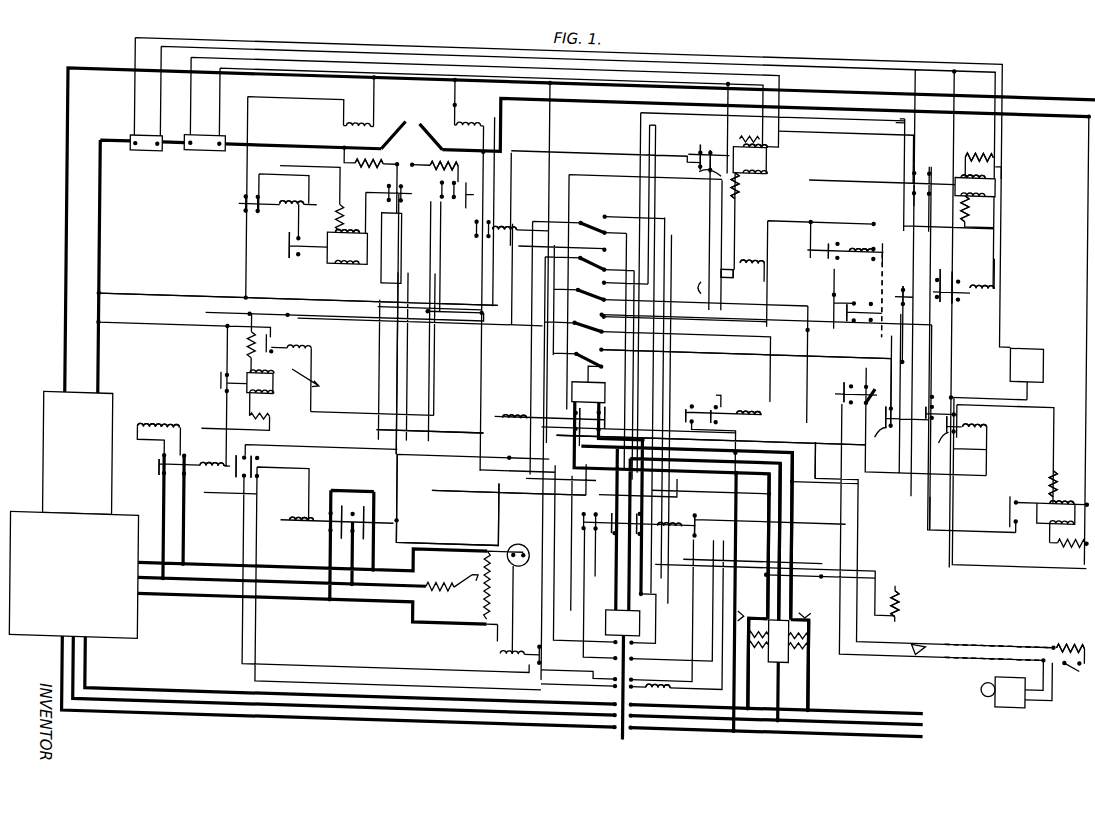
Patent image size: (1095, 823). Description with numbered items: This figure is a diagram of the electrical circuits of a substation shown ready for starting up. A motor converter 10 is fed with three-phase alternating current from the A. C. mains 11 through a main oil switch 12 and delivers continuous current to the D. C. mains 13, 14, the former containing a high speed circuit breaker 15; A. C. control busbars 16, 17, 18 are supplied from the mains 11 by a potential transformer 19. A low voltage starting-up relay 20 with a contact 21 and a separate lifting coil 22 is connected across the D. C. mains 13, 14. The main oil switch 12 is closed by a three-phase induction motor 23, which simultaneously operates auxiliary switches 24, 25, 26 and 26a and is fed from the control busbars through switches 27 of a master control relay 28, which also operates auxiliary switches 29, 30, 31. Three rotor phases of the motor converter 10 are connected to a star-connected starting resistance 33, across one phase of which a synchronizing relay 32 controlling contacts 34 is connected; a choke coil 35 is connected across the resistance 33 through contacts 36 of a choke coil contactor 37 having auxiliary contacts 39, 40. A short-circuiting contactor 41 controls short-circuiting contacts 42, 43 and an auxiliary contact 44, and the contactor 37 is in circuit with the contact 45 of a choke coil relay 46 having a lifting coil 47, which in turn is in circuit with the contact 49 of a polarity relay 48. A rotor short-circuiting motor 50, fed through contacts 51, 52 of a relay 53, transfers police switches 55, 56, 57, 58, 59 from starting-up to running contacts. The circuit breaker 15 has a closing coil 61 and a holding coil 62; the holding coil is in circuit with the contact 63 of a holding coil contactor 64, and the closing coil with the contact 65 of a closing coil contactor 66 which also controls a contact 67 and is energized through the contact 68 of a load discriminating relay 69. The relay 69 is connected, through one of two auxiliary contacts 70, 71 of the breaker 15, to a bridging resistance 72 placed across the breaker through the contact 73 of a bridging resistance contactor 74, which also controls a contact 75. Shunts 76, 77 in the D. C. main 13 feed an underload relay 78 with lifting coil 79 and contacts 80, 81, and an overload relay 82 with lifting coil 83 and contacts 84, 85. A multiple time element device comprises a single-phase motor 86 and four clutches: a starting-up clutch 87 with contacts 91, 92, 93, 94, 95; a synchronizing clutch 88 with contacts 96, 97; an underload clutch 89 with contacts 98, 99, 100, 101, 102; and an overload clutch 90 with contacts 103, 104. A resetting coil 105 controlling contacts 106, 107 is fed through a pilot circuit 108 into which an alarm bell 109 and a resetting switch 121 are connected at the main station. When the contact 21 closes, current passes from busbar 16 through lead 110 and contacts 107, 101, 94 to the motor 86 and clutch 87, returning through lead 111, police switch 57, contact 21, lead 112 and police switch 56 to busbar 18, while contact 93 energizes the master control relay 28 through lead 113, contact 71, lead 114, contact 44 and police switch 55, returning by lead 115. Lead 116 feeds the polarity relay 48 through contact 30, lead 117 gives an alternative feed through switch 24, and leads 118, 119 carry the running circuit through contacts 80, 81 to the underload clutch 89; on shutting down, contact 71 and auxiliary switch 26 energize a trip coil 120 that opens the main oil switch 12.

The motor converter 10 is at (74, 514).
The A. C. mains 11 is at (927, 710).
The main oil switch 12 is at (622, 716).
The D. C. main 13 is at (101, 183).
The D. C. main 14 is at (66, 177).
The high speed circuit breaker 15 is at (402, 124).
The A. C. control busbar 16 is at (797, 510).
The A. C. control busbar 17 is at (786, 486).
The A. C. control busbar 18 is at (772, 521).
The potential transformer 19 is at (795, 628).
The starting-up relay 20 is at (1052, 480).
The contact 21 is at (1013, 480).
The lifting coil 22 is at (1061, 485).
The three-phase induction motor 23 is at (621, 675).
The auxiliary switch 24 is at (612, 633).
The auxiliary switch 25 is at (612, 641).
The auxiliary switch 26 is at (648, 700).
The auxiliary switch 26a is at (599, 662).
The switches 27 is at (645, 506).
The master control relay 28 is at (669, 536).
The auxiliary switch 29 is at (599, 561).
The auxiliary switch 30 is at (587, 520).
The auxiliary switch 31 is at (699, 506).
The synchronizing relay 32 is at (510, 630).
The starting resistance 33 is at (467, 572).
The contacts 34 is at (510, 644).
The choke coil 35 is at (158, 414).
The contacts 36 is at (162, 472).
The choke coil contactor 37 is at (220, 464).
The auxiliary contact 39 is at (240, 475).
The auxiliary contact 40 is at (262, 462).
The short-circuiting contactor 41 is at (300, 516).
The short-circuiting contact 42 is at (346, 497).
The short-circuiting contact 43 is at (369, 497).
The auxiliary contact 44 is at (401, 510).
The contact 45 is at (222, 368).
The choke coil relay 46 is at (277, 380).
The lifting coil 47 is at (270, 410).
The polarity relay 48 is at (314, 340).
The contact 49 is at (276, 340).
The rotor short-circuiting motor 50 is at (588, 392).
The contact 51 is at (608, 400).
The contact 52 is at (578, 402).
The relay 53 is at (514, 408).
The police switch 55 is at (597, 350).
The police switch 56 is at (585, 313).
The police switch 57 is at (586, 284).
The police switch 58 is at (600, 254).
The police switch 59 is at (602, 212).
The closing coil 61 is at (359, 116).
The holding coil 62 is at (469, 115).
The contact 63 is at (478, 222).
The holding coil contactor 64 is at (506, 219).
The contact 65 is at (240, 200).
The closing coil contactor 66 is at (292, 195).
The contact 67 is at (261, 206).
The contact 68 is at (288, 246).
The load discriminating relay 69 is at (347, 246).
The auxiliary contact 70 is at (385, 189).
The auxiliary contact 71 is at (392, 248).
The bridging resistance 72 is at (364, 150).
The contact 73 is at (470, 188).
The bridging resistance contactor 74 is at (432, 154).
The contact 75 is at (452, 190).
The shunt 76 is at (146, 148).
The shunt 77 is at (205, 146).
The underload relay 78 is at (997, 158).
The lifting coil 79 is at (972, 176).
The contact 80 is at (968, 128).
The contact 81 is at (906, 157).
The overload relay 82 is at (767, 140).
The lifting coil 83 is at (752, 160).
The contact 84 is at (711, 153).
The contact 85 is at (697, 140).
The single-phase motor 86 is at (1026, 365).
The starting-up clutch 87 is at (975, 398).
The synchronizing clutch 88 is at (749, 404).
The underload clutch 89 is at (981, 276).
The overload clutch 90 is at (752, 251).
The contact 91 is at (948, 410).
The contact 92 is at (929, 384).
The contact 93 is at (887, 410).
The contact 94 is at (868, 382).
The contact 95 is at (847, 368).
The contact 96 is at (716, 386).
The contact 97 is at (692, 386).
The contact 98 is at (962, 274).
The contact 99 is at (947, 278).
The contact 100 is at (903, 260).
The contact 101 is at (885, 290).
The contact 102 is at (848, 284).
The contact 103 is at (736, 253).
The contact 104 is at (706, 266).
The resetting coil 105 is at (862, 224).
The contact 106 is at (822, 227).
The contact 107 is at (880, 225).
The pilot circuit 108 is at (922, 628).
The alarm bell 109 is at (1012, 678).
The lead 110 is at (802, 366).
The lead 111 is at (848, 156).
The lead 112 is at (828, 422).
The lead 113 is at (472, 424).
The lead 114 is at (400, 364).
The lead 115 is at (901, 578).
The lead 116 is at (200, 292).
The lead 117 is at (558, 458).
The lead 118 is at (846, 155).
The lead 119 is at (851, 106).
The trip coil 120 is at (690, 685).
The resetting switch 121 is at (1078, 636).